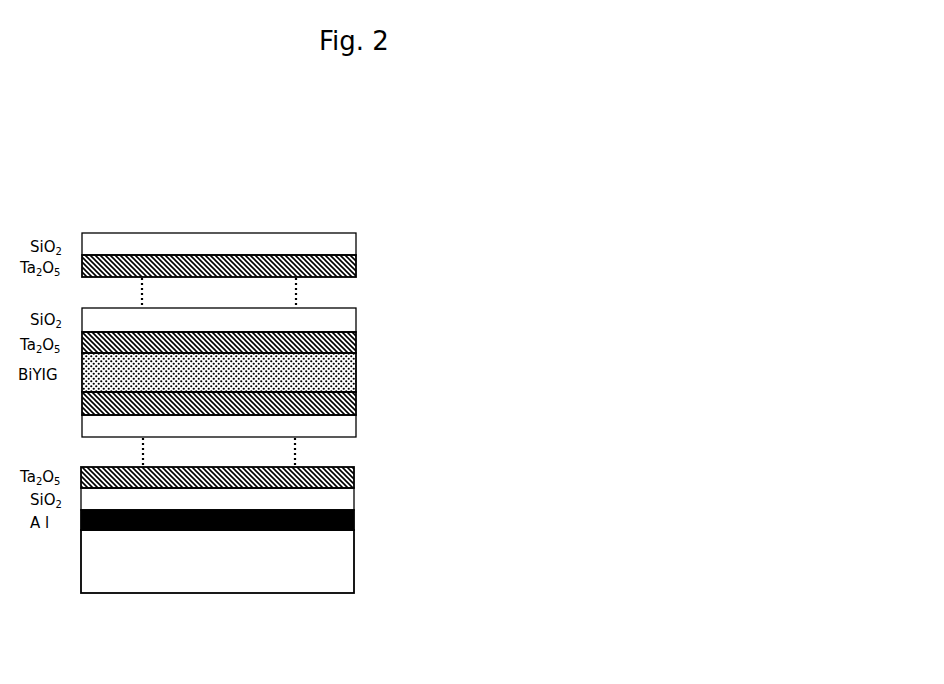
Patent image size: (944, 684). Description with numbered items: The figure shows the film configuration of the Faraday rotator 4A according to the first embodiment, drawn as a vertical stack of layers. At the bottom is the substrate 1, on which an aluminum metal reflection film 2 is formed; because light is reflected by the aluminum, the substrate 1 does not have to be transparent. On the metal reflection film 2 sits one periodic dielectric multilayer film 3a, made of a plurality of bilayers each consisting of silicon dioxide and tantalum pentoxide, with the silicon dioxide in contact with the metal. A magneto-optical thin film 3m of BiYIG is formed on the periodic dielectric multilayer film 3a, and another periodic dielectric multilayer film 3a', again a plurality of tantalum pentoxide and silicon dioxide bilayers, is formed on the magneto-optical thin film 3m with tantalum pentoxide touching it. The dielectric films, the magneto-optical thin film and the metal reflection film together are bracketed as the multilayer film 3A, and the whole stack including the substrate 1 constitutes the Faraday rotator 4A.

The substrate 1 is at (333, 566).
The metal reflection film 2 is at (354, 524).
The periodic dielectric multilayer film 3a is at (374, 451).
The periodic dielectric multilayer film 3a' is at (376, 293).
The magneto-optical thin film 3m is at (356, 376).
The magneto-optical multilayer film 3A is at (456, 377).
The Faraday rotator 4A is at (485, 417).